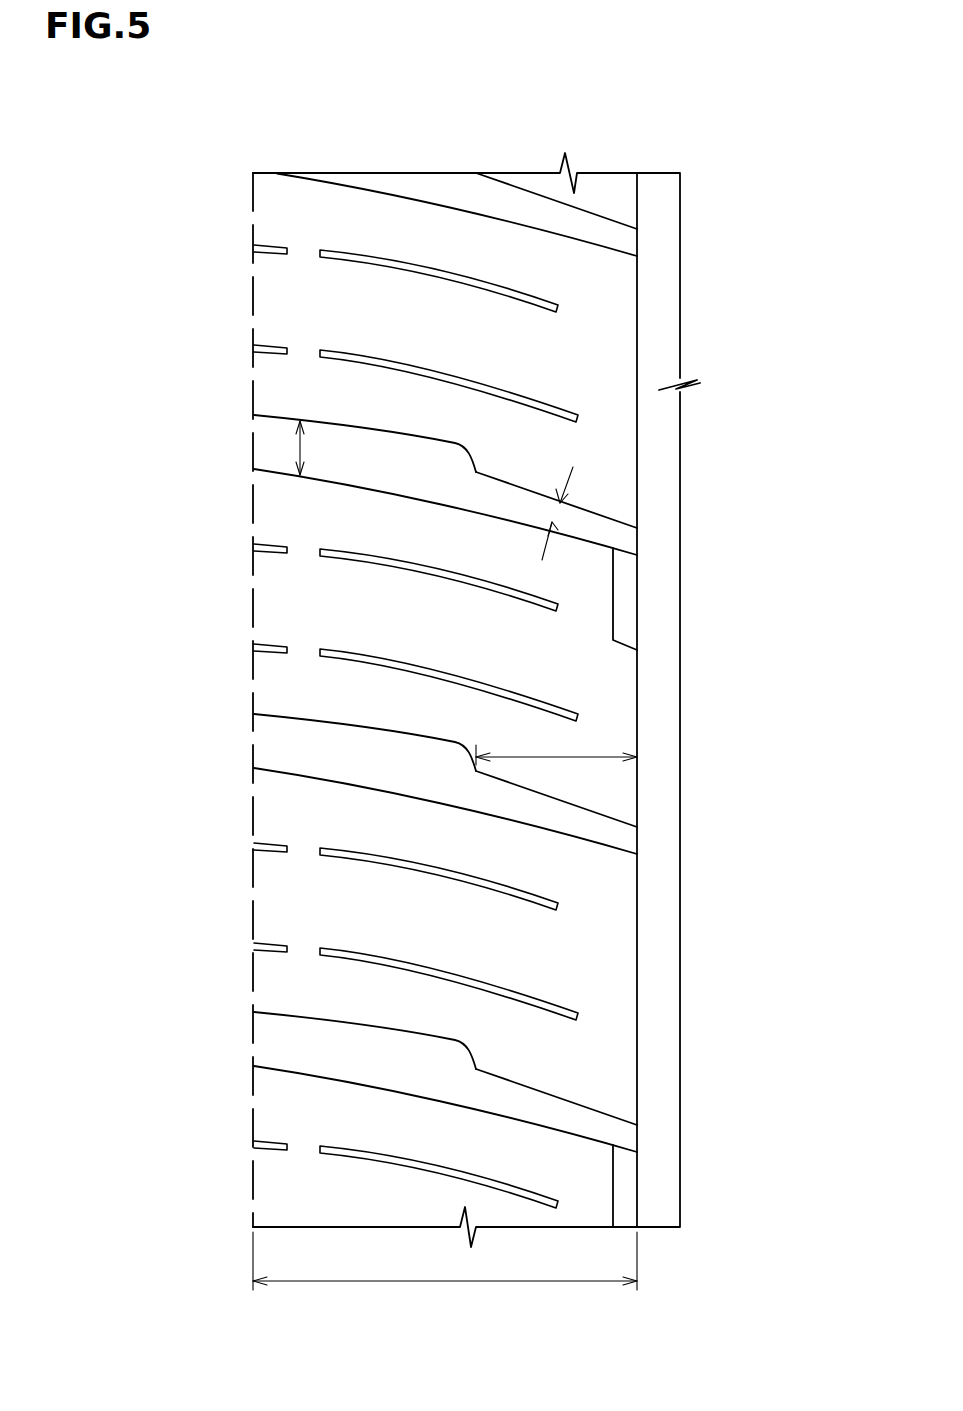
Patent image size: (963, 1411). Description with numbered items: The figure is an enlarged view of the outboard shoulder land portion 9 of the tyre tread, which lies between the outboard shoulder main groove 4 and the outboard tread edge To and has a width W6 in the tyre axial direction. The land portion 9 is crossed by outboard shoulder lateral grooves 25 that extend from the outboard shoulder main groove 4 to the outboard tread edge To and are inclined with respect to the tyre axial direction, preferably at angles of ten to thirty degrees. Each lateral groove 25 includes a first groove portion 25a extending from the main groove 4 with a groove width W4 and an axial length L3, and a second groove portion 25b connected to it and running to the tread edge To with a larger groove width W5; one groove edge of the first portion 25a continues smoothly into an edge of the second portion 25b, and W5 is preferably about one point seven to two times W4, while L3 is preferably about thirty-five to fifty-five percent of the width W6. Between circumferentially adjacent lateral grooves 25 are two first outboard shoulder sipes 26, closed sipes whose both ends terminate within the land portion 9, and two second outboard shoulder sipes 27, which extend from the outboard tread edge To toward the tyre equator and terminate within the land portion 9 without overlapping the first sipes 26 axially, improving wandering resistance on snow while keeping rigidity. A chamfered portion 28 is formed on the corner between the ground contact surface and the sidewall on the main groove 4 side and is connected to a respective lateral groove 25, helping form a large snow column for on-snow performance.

The outboard shoulder main groove 4 is at (656, 208).
The outboard shoulder land portion 9 is at (437, 240).
The outboard shoulder lateral grooves 25 is at (443, 662).
The first groove portion 25a is at (530, 505).
The second groove portion 25b is at (393, 463).
The first outboard shoulder sipes 26 is at (508, 292).
The second outboard shoulder sipes 27 is at (272, 249).
The chamfered portion 28 is at (625, 602).
The outboard tread edge To is at (252, 190).
The groove width of the first groove portion W4 is at (557, 517).
The groove width of the second groove portion W5 is at (300, 447).
The length in the tyre axial direction of the first groove portion L3 is at (580, 757).
The width in the tyre axial direction of the outboard shoulder land portion W6 is at (445, 1275).